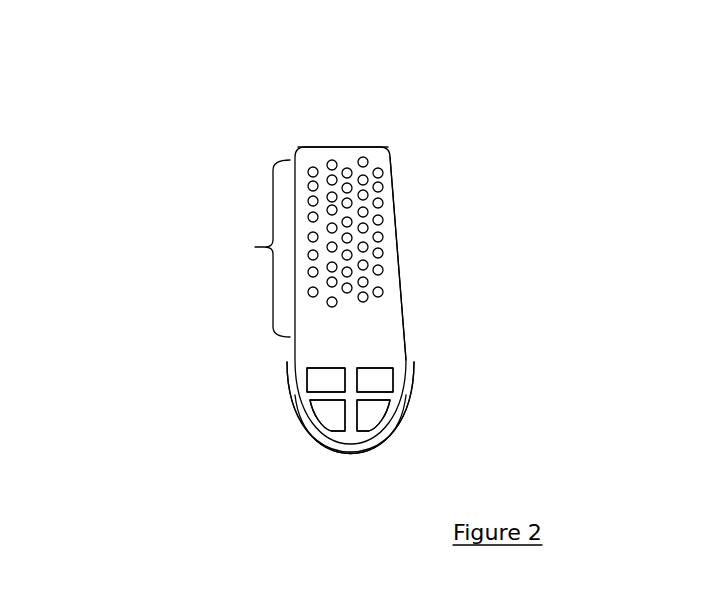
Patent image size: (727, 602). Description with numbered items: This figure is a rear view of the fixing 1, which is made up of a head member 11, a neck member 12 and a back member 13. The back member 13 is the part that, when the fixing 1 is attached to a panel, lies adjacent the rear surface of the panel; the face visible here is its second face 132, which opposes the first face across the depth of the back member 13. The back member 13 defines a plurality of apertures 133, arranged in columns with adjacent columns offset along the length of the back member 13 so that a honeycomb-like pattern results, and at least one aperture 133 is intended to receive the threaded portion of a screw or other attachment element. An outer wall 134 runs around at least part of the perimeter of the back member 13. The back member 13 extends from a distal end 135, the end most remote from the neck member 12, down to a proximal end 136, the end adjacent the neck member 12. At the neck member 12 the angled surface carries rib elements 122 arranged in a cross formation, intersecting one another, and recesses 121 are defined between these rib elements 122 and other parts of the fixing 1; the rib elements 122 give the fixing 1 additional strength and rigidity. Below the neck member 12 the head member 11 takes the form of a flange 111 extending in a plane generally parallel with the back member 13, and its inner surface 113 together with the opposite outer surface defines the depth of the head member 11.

The fixing 1 is at (218, 150).
The back member 13 is at (395, 148).
The distal end 135 is at (359, 120).
The second face 132 is at (398, 277).
The outer wall 134 is at (308, 148).
The apertures 133 is at (250, 248).
The proximal end 136 is at (263, 368).
The head member 11 is at (292, 408).
The inner surface 113 is at (307, 437).
The neck member 12 is at (367, 413).
The rib elements 122 is at (366, 398).
The recesses 121 is at (318, 385).
The flange 111 is at (388, 432).